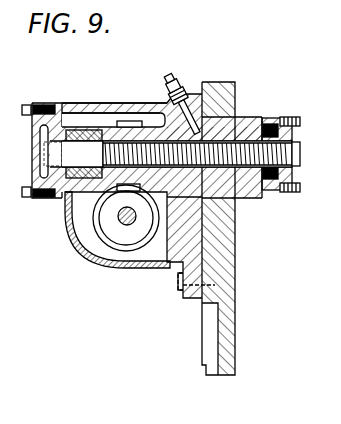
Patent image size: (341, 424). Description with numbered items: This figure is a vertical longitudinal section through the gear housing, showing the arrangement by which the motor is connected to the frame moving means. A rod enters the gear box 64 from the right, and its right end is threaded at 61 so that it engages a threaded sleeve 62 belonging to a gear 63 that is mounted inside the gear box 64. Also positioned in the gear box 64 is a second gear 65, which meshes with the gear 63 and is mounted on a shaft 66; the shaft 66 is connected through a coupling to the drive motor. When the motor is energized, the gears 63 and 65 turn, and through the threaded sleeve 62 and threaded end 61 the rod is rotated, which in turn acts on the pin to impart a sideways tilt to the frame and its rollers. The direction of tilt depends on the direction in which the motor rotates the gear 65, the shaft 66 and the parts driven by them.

The threaded end of rod 61 is at (297, 142).
The threaded sleeve 62 is at (251, 134).
The gear 63 is at (127, 121).
The gear box 64 is at (72, 109).
The gear 65 is at (124, 237).
The shaft 66 is at (124, 220).